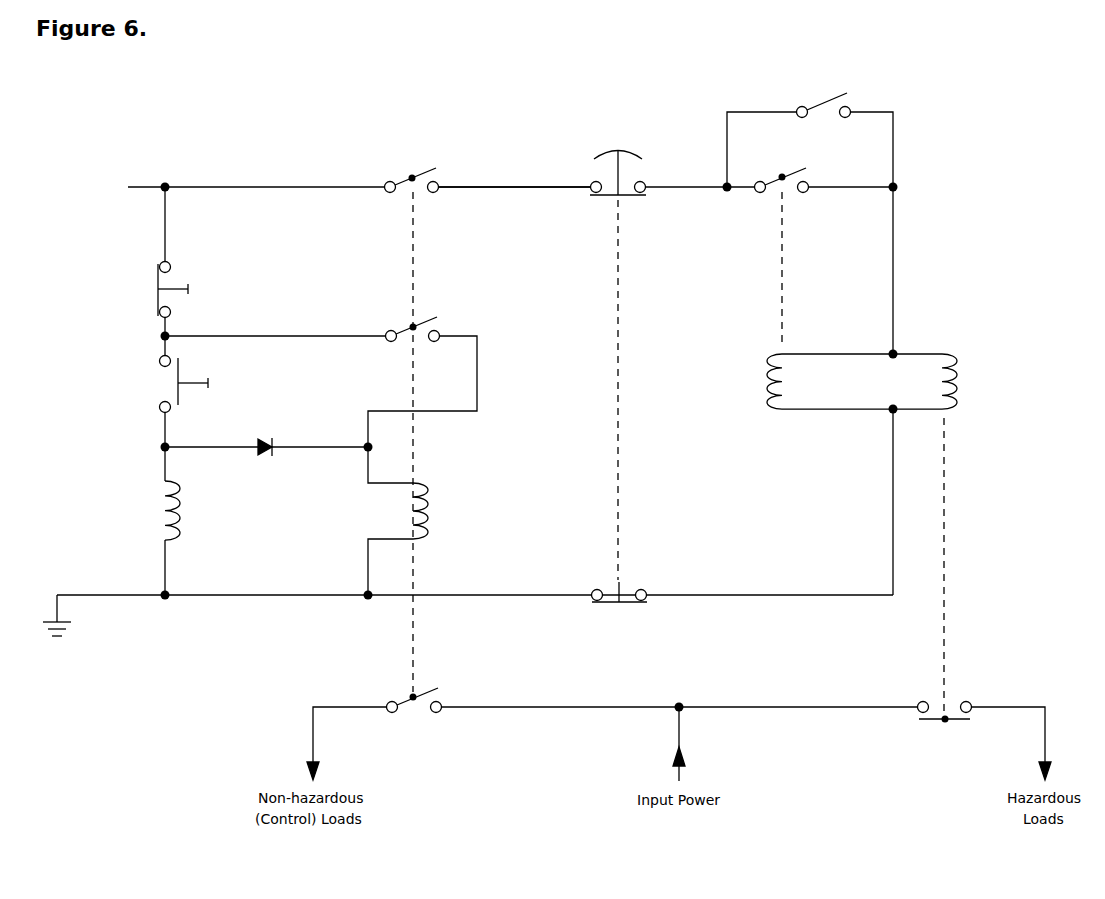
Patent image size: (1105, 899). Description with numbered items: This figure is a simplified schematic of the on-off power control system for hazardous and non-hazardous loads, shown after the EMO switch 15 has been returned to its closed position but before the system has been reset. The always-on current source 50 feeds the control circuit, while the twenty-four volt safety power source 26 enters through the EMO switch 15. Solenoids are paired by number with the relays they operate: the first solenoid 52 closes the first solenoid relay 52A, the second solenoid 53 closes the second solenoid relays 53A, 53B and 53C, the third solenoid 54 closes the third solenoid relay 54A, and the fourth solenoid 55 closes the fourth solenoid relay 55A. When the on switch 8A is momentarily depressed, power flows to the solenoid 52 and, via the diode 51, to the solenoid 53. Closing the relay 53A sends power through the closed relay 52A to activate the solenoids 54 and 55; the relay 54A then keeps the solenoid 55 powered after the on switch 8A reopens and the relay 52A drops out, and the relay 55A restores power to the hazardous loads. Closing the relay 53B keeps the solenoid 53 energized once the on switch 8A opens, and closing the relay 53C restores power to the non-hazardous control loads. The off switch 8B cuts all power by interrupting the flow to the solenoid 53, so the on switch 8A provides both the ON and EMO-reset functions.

The current source 50 is at (209, 177).
The off switch 8B is at (166, 261).
The on switch 8A is at (139, 390).
The diode 51 is at (265, 461).
The first solenoid 52 is at (192, 523).
The second solenoid 53 is at (410, 442).
The second solenoid relay 53A is at (488, 166).
The second solenoid relay 53B is at (321, 367).
The second solenoid relay 53C is at (612, 734).
The power source 26 is at (494, 188).
The EMO switch 15 is at (661, 359).
The first solenoid relay 52A is at (810, 133).
The third solenoid relay 54A is at (824, 257).
The third solenoid 54 is at (819, 391).
The fourth solenoid 55 is at (941, 534).
The fourth solenoid relay 55A is at (985, 741).